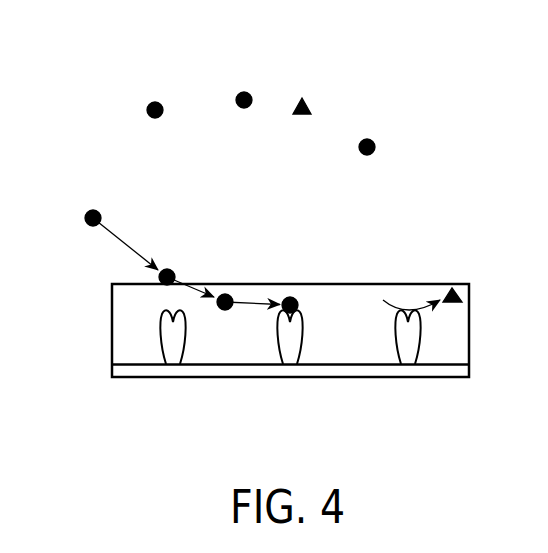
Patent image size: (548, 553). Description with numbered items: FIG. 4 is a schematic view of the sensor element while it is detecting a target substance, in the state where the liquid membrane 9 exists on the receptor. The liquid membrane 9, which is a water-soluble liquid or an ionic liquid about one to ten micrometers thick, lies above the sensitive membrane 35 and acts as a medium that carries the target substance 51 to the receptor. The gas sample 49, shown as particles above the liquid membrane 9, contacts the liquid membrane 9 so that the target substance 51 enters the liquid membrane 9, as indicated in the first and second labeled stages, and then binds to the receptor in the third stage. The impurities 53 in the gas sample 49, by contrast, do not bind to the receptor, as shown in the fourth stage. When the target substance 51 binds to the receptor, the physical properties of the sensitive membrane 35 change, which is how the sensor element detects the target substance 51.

The liquid membrane 9 is at (143, 343).
The sensitive membrane 35 is at (412, 372).
The gas sample 49 is at (281, 83).
The target substance 51 is at (93, 210).
The impurities 53 is at (454, 287).